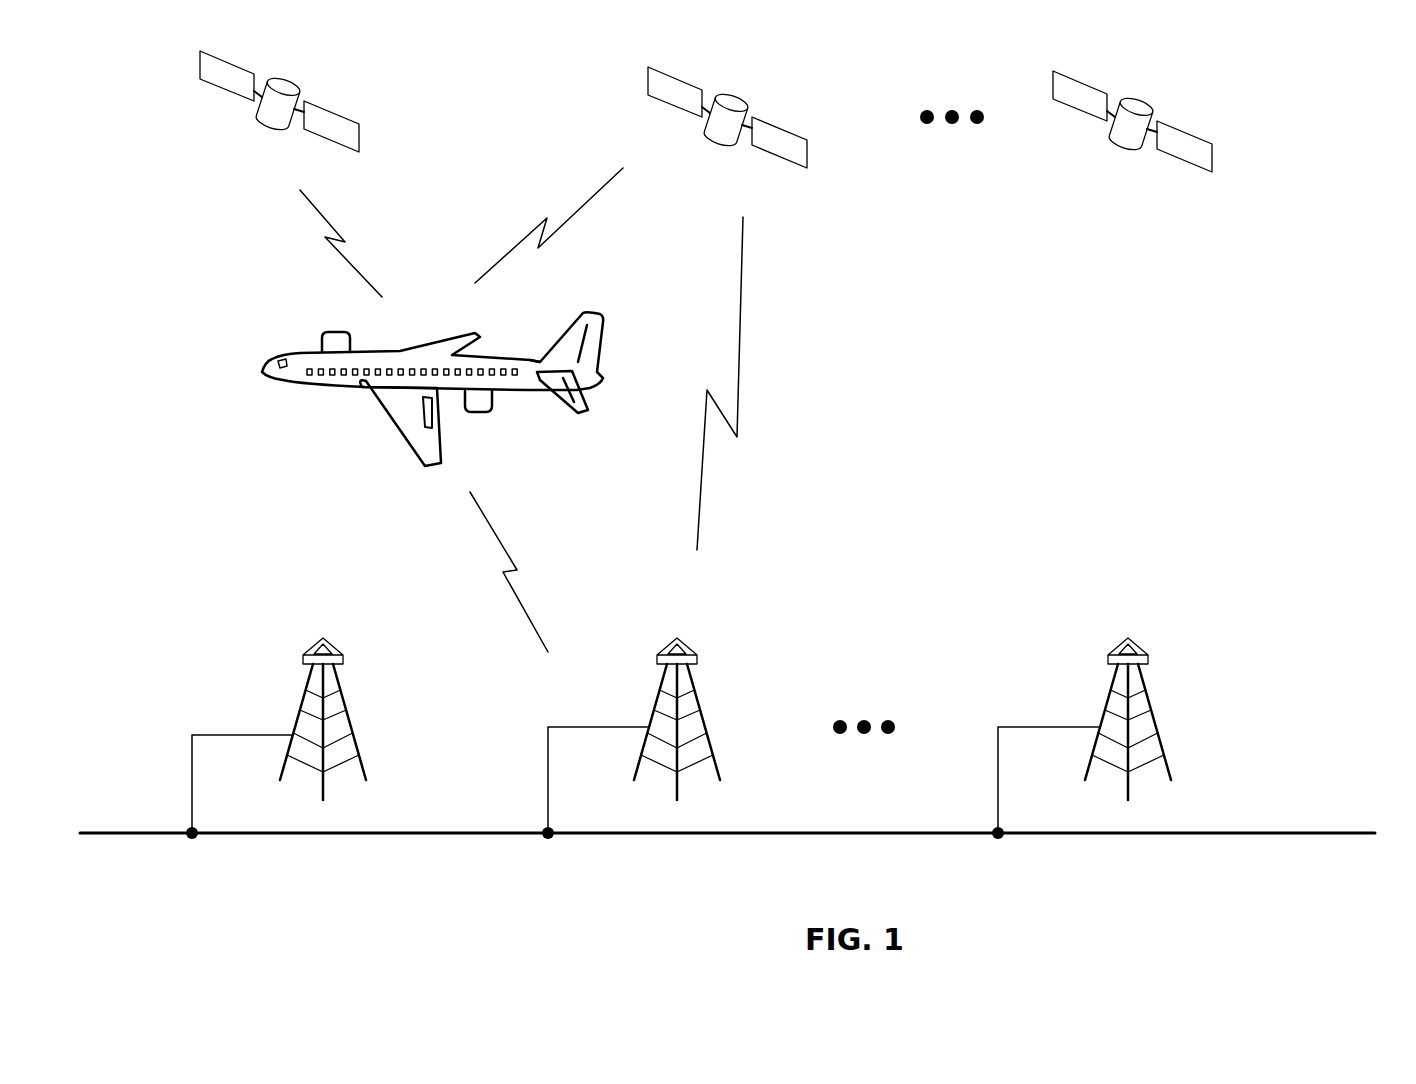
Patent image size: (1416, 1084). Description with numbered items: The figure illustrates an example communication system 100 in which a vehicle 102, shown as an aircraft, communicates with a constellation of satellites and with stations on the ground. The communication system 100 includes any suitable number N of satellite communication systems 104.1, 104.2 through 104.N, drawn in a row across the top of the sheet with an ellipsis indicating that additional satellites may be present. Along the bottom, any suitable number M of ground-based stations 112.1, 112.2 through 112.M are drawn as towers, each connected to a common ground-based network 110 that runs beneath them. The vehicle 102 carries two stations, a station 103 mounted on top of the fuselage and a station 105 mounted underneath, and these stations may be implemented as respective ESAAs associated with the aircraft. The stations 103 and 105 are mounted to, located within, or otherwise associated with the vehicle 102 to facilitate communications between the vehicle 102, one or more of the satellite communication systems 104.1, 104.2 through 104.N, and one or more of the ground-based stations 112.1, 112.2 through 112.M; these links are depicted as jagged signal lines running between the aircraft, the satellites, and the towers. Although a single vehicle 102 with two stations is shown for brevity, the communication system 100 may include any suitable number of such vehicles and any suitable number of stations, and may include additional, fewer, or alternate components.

The communication system 100 is at (1316, 189).
The vehicle 102 is at (501, 356).
The station 103 is at (335, 332).
The satellite communication system 104.1 is at (294, 78).
The satellite communication system 104.2 is at (747, 98).
The satellite communication system 104.N is at (1145, 98).
The station 105 is at (493, 412).
The ground-based network 110 is at (157, 833).
The ground-based station 112.1 is at (335, 682).
The ground-based station 112.2 is at (695, 682).
The ground-based station 112.M is at (1146, 682).